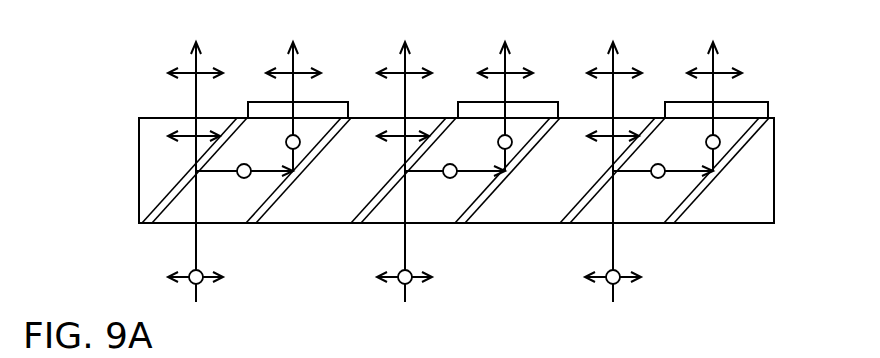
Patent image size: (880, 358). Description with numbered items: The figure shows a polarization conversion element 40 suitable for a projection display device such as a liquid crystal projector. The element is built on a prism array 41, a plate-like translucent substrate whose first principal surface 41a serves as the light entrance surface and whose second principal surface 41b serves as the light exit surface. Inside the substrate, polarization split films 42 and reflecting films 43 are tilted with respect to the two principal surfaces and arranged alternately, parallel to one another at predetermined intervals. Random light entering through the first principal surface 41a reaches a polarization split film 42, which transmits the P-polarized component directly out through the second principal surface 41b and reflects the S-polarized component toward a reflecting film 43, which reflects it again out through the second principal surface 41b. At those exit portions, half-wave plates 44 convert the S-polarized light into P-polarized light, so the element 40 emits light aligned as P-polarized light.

The polarization conversion element 40 is at (458, 72).
The prism array 41 is at (774, 177).
The first principal surface 41a is at (160, 224).
The second principal surface 41b is at (160, 118).
The polarization split film 42 is at (372, 210).
The reflecting film 43 is at (478, 208).
The half-wave plate 44 is at (543, 102).